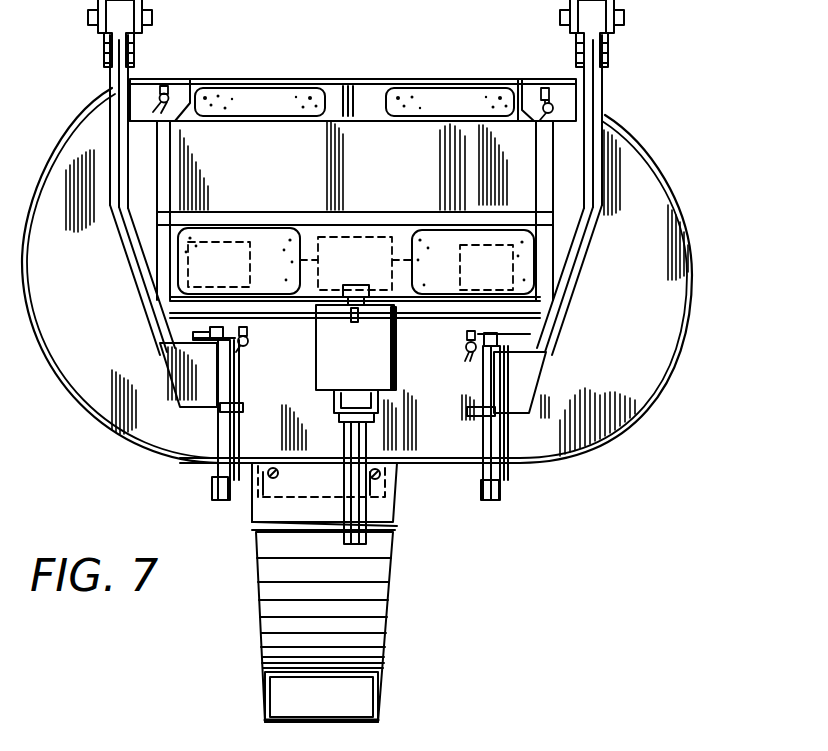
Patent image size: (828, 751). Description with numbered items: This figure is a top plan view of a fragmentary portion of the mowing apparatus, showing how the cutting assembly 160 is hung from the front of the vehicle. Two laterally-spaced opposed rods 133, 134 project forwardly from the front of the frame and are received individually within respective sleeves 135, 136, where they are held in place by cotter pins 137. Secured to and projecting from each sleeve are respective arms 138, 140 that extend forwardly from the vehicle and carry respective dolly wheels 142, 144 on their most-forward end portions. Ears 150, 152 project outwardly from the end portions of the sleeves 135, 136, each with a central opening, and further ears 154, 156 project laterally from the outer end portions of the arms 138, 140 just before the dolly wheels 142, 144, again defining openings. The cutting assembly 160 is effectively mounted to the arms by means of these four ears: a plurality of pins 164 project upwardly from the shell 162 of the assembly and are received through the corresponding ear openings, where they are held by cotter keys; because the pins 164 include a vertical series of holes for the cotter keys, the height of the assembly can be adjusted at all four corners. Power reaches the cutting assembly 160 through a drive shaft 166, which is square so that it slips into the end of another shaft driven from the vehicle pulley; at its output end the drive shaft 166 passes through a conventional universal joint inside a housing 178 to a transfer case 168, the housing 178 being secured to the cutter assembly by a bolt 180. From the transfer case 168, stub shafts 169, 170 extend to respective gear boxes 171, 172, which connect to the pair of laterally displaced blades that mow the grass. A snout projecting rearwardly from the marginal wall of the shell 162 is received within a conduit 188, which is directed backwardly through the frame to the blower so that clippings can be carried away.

The rod 133 is at (205, 498).
The rod 134 is at (503, 500).
The sleeve 135 is at (208, 472).
The sleeve 136 is at (506, 470).
The cotter pin 137 is at (160, 342).
The arm 138 is at (120, 238).
The arm 140 is at (588, 266).
The dolly wheel 142 is at (98, 57).
The dolly wheel 144 is at (606, 70).
The ear 150 is at (254, 336).
The ear 152 is at (460, 341).
The ear 154 is at (148, 90).
The ear 156 is at (526, 82).
The cutting assembly 160 is at (697, 251).
The shell 162 is at (642, 367).
The pin 164 is at (170, 92).
The drive shaft 166 is at (368, 538).
The transfer case 168 is at (352, 237).
The stub shaft 169 is at (265, 250).
The stub shaft 170 is at (404, 228).
The gear box 171 is at (215, 240).
The gear box 172 is at (496, 250).
The housing 178 is at (318, 380).
The bolt 180 is at (355, 320).
The conduit 188 is at (390, 644).